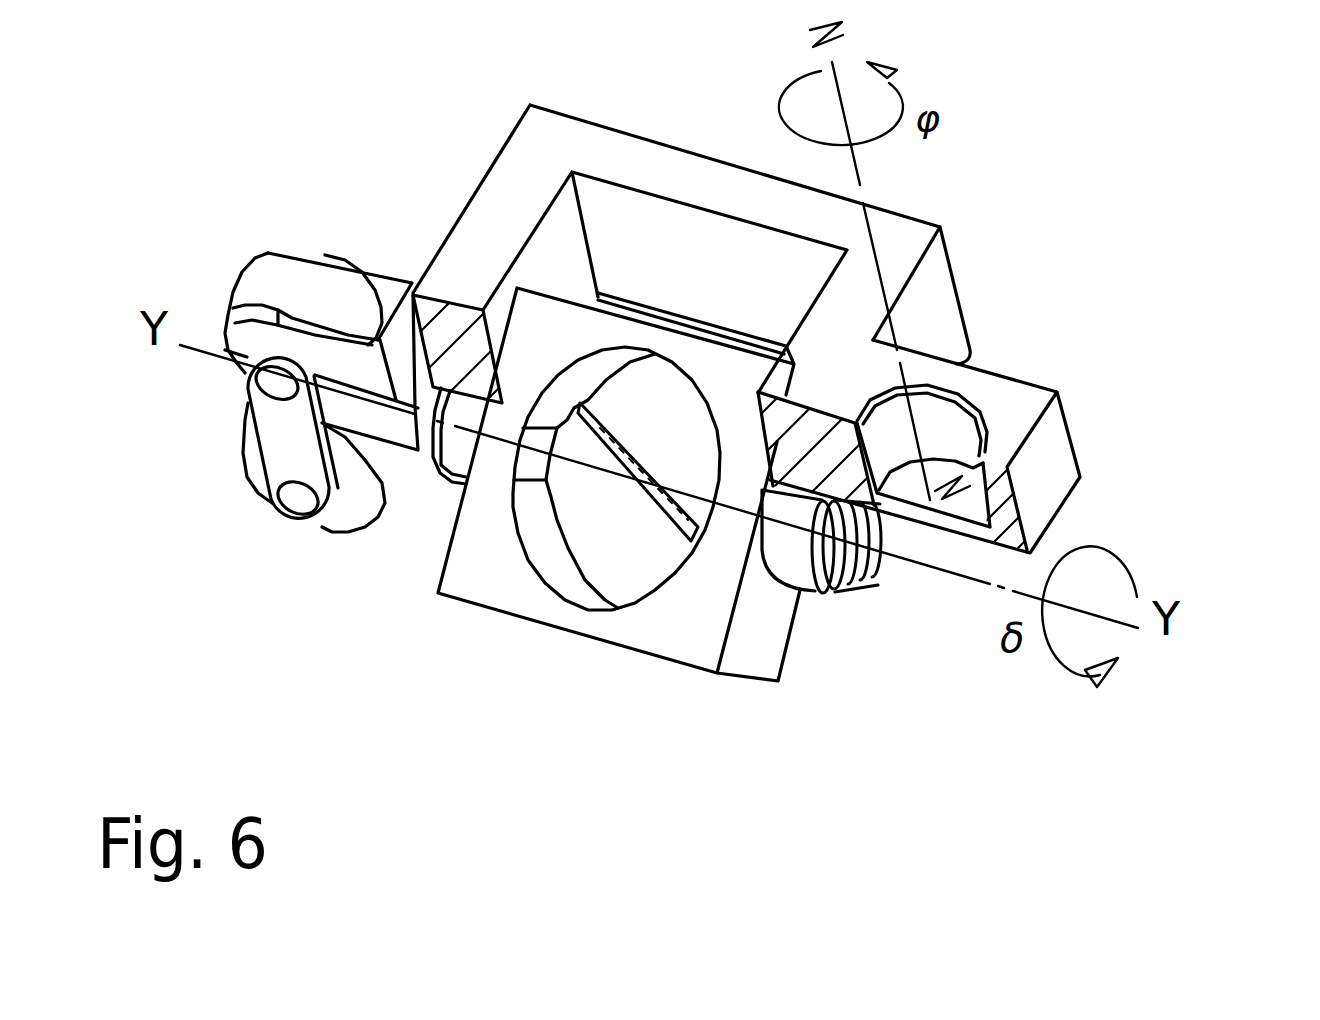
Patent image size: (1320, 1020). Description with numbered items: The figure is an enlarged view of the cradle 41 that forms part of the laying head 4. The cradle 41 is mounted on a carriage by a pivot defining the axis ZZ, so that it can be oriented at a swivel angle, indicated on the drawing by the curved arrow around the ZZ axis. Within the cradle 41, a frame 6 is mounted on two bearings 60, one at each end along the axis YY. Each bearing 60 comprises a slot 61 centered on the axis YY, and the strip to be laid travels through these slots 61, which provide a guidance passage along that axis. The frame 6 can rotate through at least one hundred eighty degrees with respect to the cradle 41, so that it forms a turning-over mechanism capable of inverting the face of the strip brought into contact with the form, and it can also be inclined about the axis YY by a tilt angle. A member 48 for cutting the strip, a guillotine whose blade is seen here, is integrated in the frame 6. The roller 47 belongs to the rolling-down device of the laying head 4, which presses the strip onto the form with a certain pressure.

The laying head 4 is at (1100, 323).
The frame 6 is at (595, 533).
The cradle 41 is at (726, 254).
The roller 47 is at (321, 315).
The member for cutting the strip 48 is at (600, 450).
The bearing 60 is at (560, 582).
The slot 61 is at (901, 607).